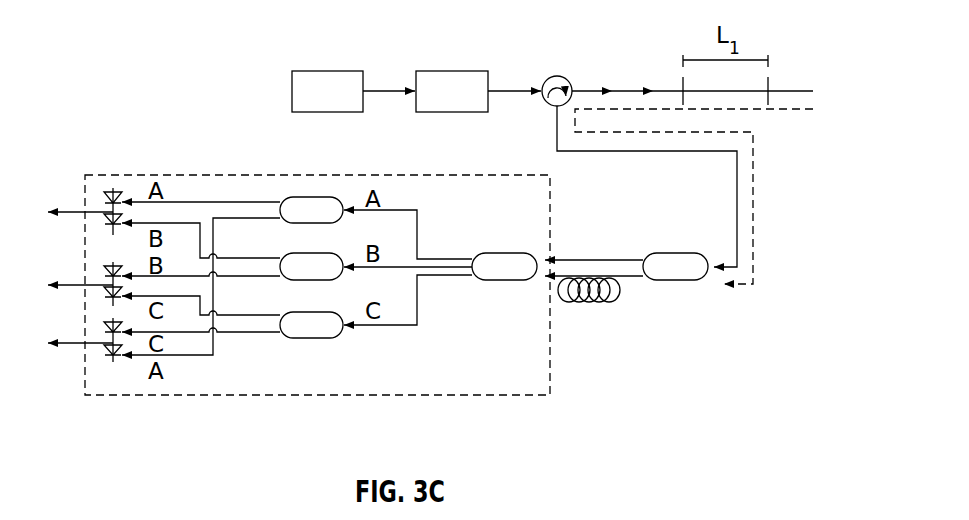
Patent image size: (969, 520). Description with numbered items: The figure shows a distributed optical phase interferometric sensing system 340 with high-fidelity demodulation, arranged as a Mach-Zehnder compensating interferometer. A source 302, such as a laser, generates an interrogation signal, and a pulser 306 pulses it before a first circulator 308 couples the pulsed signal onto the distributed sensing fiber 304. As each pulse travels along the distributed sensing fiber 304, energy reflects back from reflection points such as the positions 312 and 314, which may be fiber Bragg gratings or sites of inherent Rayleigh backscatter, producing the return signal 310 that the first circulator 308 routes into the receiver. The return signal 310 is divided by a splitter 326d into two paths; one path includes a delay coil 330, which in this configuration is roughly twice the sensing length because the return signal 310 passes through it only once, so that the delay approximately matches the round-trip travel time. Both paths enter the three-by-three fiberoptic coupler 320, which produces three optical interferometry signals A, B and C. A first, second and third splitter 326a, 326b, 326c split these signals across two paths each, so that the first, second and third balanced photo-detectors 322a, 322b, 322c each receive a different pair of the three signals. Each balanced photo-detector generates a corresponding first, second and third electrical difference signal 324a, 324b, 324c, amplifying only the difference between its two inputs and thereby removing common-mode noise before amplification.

The distributed optical phase interferometric sensing system 340 is at (196, 64).
The source 302 is at (328, 70).
The pulser 306 is at (452, 70).
The first circulator 308 is at (553, 76).
The distributed sensing fiber 304 is at (585, 89).
The return signal 310 is at (765, 110).
The position 312 is at (683, 84).
The position 314 is at (768, 84).
The 3×3 fiberoptic coupler 320 is at (500, 282).
The first splitter 326a is at (310, 197).
The second splitter 326b is at (312, 254).
The third splitter 326c is at (312, 342).
The splitter 326d is at (672, 283).
The delay coil 330 is at (592, 303).
The first balanced photo-detector 322a is at (112, 190).
The second balanced photo-detector 322b is at (108, 268).
The third balanced photo-detector 322c is at (112, 364).
The first electrical difference signal 324a is at (68, 211).
The second electrical difference signal 324b is at (80, 286).
The third electrical difference signal 324c is at (68, 345).